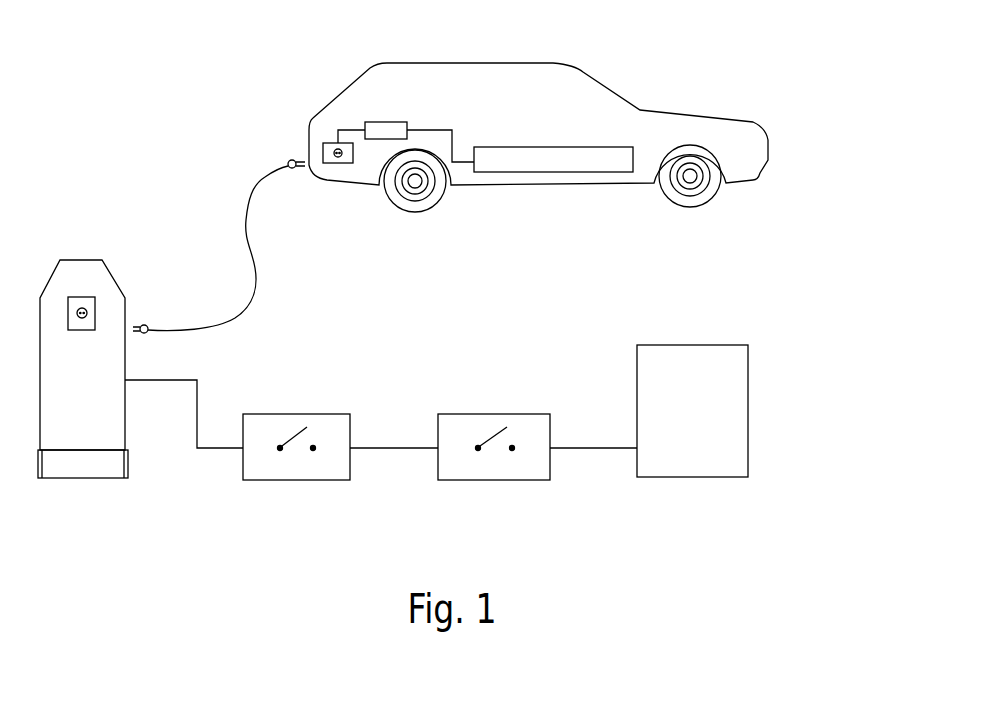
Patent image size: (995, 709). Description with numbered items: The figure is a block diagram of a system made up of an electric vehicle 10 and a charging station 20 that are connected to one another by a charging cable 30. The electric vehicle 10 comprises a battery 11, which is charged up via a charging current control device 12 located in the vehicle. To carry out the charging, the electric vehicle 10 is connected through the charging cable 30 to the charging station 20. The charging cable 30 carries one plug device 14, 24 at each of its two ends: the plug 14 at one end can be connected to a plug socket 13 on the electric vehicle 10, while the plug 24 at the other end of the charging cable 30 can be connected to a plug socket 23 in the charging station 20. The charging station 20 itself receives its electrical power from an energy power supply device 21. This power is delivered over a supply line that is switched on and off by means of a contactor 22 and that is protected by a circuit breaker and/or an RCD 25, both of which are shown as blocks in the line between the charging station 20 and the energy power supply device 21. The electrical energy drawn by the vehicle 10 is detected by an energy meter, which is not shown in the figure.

The electric vehicle 10 is at (463, 63).
The battery 11 is at (555, 147).
The charging current control device 12 is at (390, 121).
The plug socket 13 is at (310, 124).
The plug device 14 is at (291, 162).
The charging cable 30 is at (257, 270).
The plug device 24 is at (148, 328).
The charging station 20 is at (82, 259).
The plug socket 23 is at (88, 308).
The contactor 22 is at (297, 420).
The circuit breaker and/or RCD 25 is at (495, 420).
The energy power supply device 21 is at (693, 352).